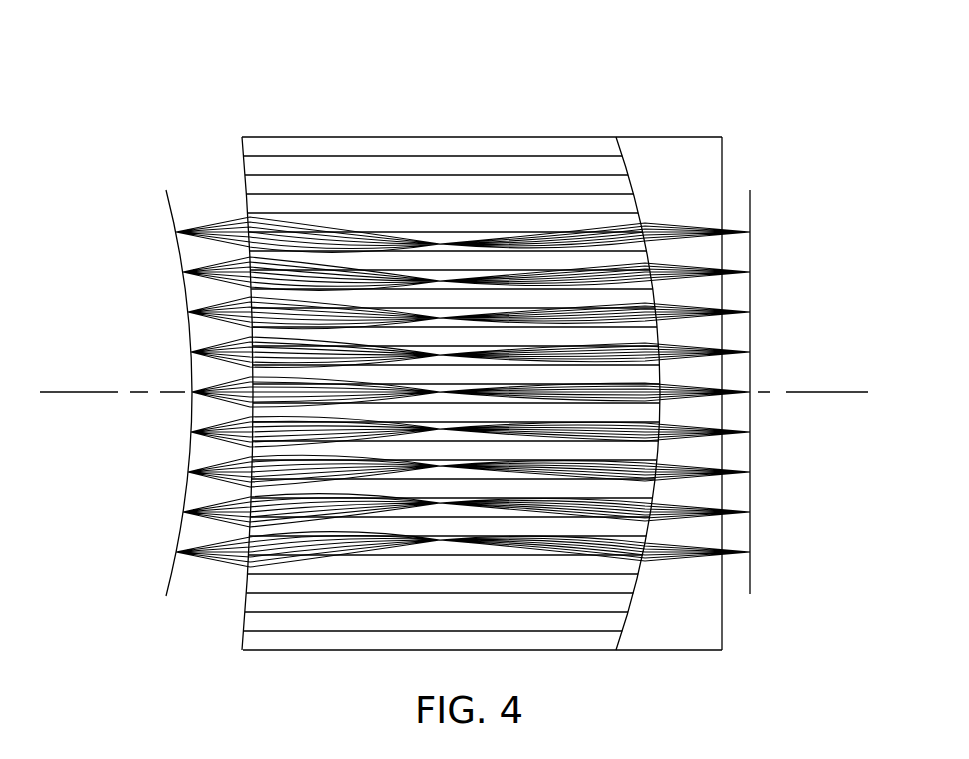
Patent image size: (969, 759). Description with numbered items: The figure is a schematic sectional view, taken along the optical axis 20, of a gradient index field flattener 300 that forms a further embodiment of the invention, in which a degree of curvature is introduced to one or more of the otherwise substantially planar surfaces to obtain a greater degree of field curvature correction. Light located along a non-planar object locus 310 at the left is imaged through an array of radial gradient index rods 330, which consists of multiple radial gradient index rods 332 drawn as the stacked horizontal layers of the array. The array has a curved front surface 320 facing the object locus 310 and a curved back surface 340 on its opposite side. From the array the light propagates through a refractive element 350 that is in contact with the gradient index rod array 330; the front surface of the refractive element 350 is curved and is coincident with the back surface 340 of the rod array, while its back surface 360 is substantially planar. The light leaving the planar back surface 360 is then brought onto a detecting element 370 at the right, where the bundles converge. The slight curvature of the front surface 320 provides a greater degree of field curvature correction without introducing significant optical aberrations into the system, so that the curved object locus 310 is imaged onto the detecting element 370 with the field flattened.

The gradient index field flattener 300 is at (125, 69).
The non-planar object locus 310 is at (168, 200).
The curved front surface 320 is at (243, 186).
The array of radial gradient index rods 330 is at (372, 137).
The radial gradient index rods 332 is at (503, 147).
The curved back surface 340 is at (633, 137).
The refractive element 350 is at (677, 148).
The substantially planar back surface 360 is at (722, 158).
The detecting element 370 is at (752, 208).
The optical axis 20 is at (66, 392).